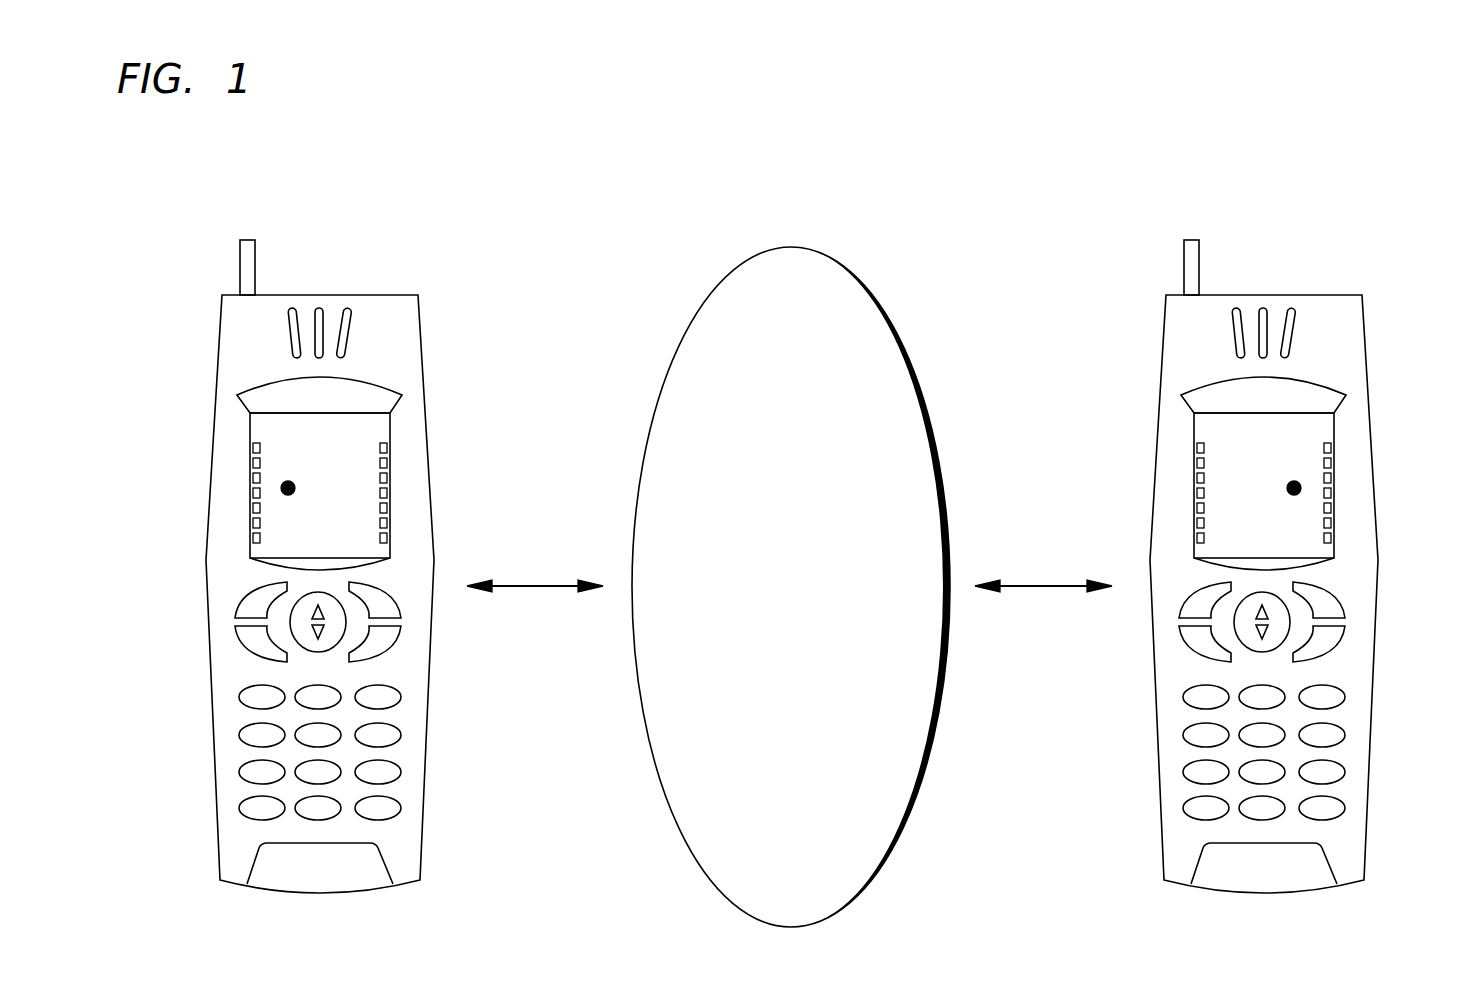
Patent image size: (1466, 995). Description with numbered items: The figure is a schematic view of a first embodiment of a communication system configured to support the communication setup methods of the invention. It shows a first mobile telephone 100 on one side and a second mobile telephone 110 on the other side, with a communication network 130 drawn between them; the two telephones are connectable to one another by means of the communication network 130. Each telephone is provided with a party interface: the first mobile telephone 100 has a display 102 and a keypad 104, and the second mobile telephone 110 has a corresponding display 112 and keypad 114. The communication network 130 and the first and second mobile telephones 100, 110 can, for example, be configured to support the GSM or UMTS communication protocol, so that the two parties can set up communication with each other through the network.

The first mobile telephone 100 is at (362, 214).
The display 102 is at (288, 488).
The keypad 104 is at (250, 735).
The second mobile telephone 110 is at (1290, 215).
The display 112 is at (1294, 488).
The keypad 114 is at (1327, 735).
The communication network 130 is at (922, 805).